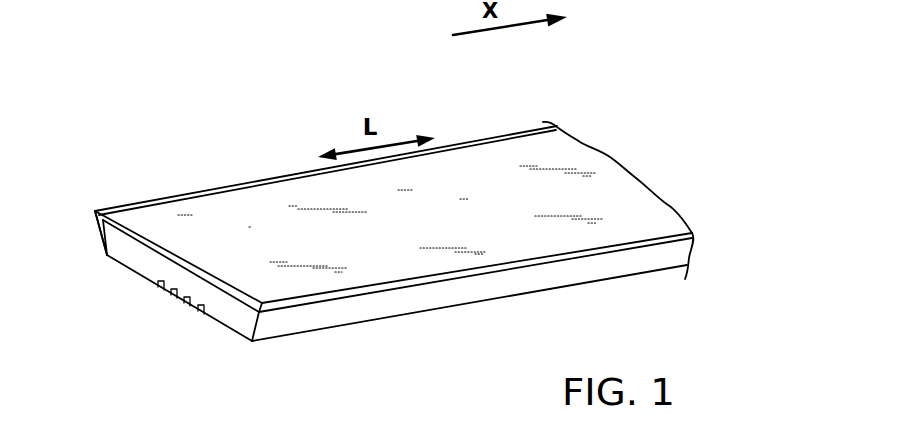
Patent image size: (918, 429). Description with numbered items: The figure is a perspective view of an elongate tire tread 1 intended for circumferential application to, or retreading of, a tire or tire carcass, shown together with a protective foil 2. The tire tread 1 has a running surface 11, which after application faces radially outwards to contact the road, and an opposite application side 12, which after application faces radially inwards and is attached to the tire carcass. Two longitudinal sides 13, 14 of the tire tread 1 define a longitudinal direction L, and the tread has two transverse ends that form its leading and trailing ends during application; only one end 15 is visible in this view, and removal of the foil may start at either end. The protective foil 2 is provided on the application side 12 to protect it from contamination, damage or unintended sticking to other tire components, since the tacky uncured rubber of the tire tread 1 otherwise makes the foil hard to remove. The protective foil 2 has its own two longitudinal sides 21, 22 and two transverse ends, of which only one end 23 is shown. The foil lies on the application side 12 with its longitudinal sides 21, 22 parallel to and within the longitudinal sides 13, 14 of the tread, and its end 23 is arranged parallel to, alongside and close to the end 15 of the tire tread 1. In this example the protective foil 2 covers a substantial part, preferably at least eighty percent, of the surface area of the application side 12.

The tire tread 1 is at (293, 325).
The protective foil 2 is at (617, 233).
The running surface 11 is at (228, 330).
The application side 12 is at (110, 211).
The longitudinal side 13 is at (455, 278).
The longitudinal side 14 is at (191, 194).
The end of the tire tread 15 is at (142, 262).
The longitudinal side of the protective foil 21 is at (373, 290).
The longitudinal side of the protective foil 22 is at (498, 137).
The end of the protective foil 23 is at (105, 238).